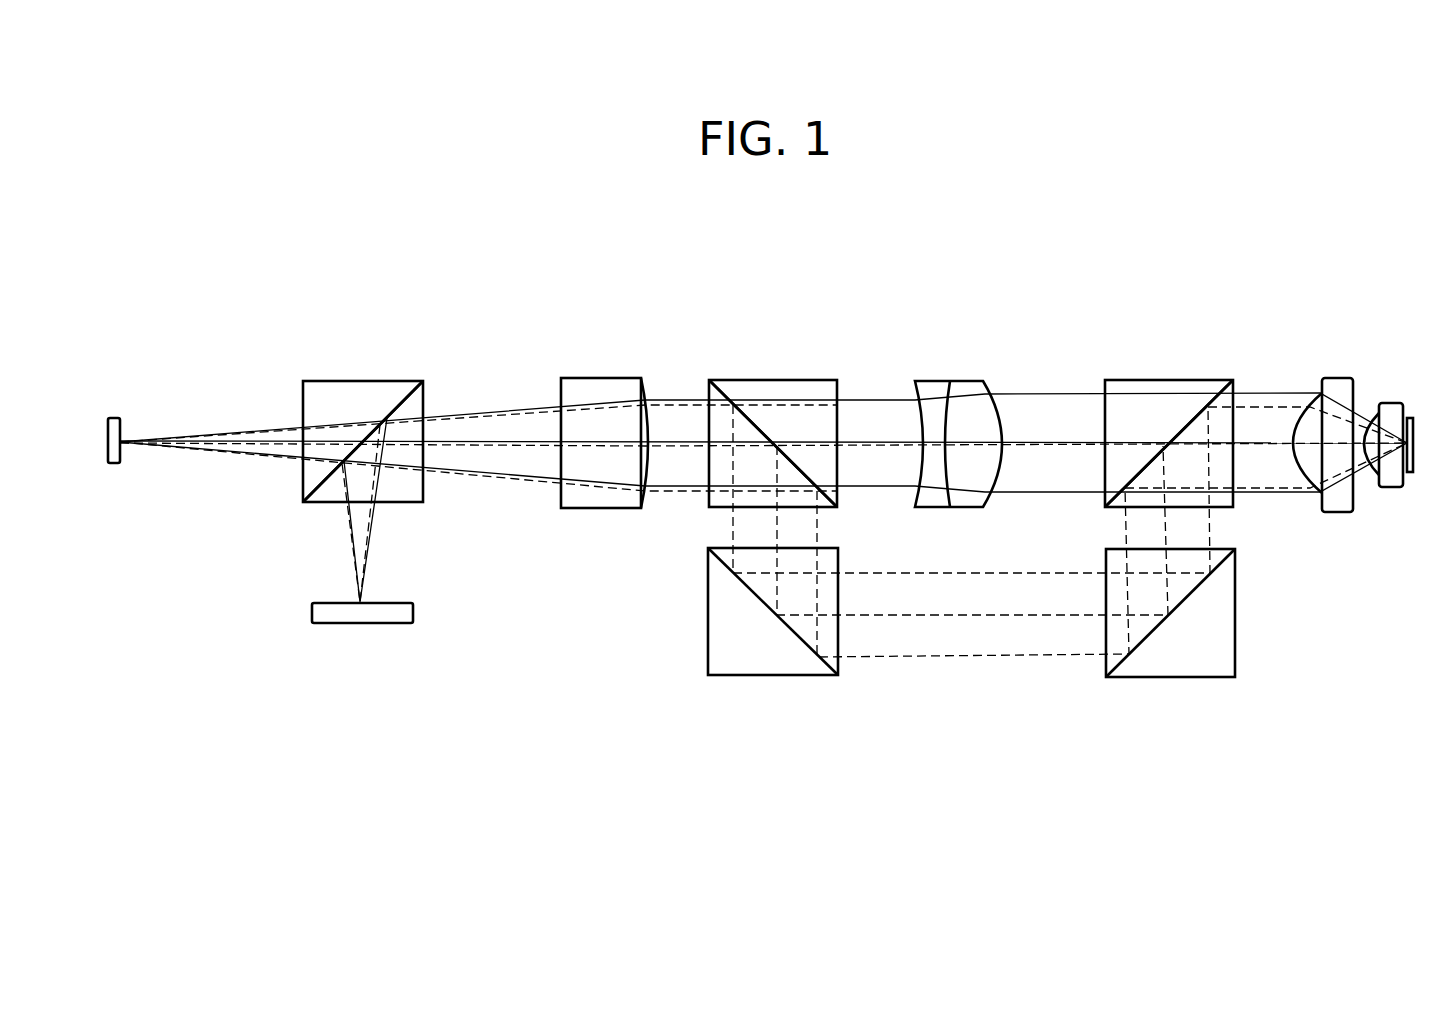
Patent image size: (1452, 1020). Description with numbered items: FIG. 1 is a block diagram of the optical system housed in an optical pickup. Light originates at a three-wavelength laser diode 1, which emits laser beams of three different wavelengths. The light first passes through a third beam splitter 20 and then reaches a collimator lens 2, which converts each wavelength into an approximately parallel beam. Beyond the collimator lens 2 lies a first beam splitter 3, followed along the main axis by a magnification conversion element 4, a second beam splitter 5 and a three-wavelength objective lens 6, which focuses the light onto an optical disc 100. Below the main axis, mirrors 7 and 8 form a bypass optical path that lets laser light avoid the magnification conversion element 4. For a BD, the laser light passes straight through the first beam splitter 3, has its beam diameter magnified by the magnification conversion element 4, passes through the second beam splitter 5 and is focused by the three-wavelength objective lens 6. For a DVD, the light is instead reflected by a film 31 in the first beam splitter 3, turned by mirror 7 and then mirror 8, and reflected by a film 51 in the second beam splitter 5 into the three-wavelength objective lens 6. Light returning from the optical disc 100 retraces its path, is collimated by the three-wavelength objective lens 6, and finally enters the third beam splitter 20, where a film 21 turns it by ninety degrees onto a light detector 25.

The three-wavelength laser diode 1 is at (117, 418).
The third beam splitter 20 is at (362, 381).
The film 21 is at (320, 504).
The light detector 25 is at (337, 624).
The collimator lens 2 is at (580, 378).
The first beam splitter 3 is at (790, 380).
The film 31 is at (838, 507).
The magnification conversion element 4 is at (940, 381).
The second beam splitter 5 is at (1150, 380).
The film 51 is at (1183, 430).
The three-wavelength objective lens 6 is at (1365, 400).
The mirror 7 is at (738, 676).
The mirror 8 is at (1141, 678).
The optical disc 100 is at (1412, 474).